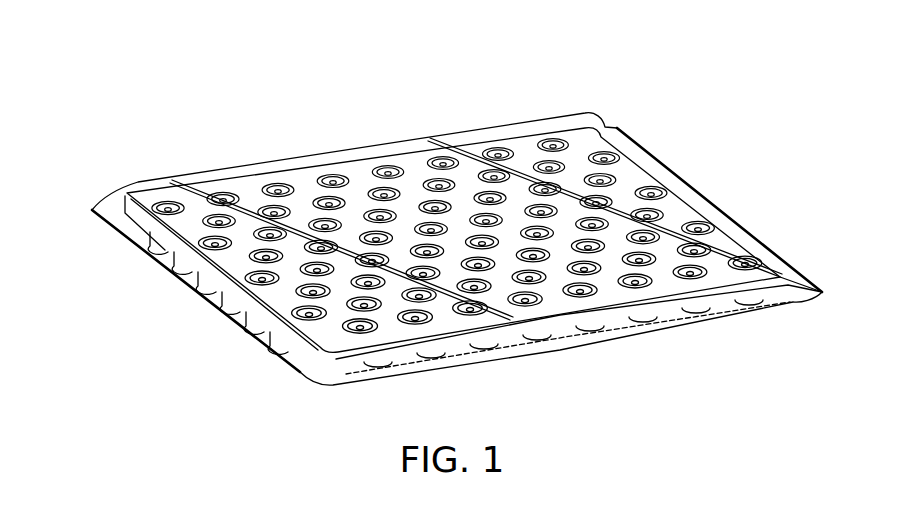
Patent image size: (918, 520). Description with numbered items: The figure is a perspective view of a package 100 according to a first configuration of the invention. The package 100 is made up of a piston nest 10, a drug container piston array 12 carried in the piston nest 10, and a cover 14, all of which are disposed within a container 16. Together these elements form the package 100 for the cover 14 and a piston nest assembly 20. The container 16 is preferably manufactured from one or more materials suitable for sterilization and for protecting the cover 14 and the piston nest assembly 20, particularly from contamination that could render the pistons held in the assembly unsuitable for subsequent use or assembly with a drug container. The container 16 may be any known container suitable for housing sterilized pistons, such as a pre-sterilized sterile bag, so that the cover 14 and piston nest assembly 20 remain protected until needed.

The package 100 is at (137, 158).
The piston nest 10 is at (583, 137).
The drug container piston array 12 is at (318, 150).
The cover 14 is at (777, 303).
The container 16 is at (683, 178).
The piston nest assembly 20 is at (185, 307).